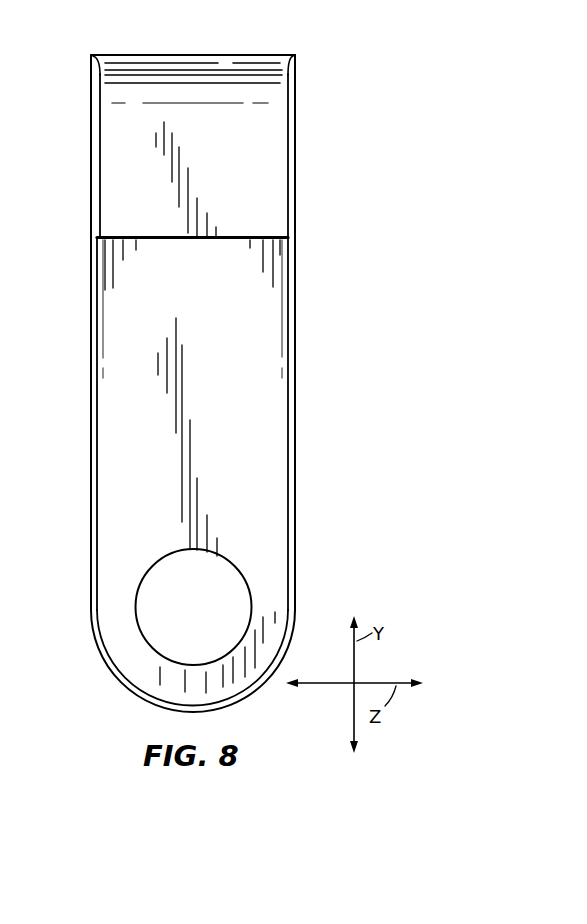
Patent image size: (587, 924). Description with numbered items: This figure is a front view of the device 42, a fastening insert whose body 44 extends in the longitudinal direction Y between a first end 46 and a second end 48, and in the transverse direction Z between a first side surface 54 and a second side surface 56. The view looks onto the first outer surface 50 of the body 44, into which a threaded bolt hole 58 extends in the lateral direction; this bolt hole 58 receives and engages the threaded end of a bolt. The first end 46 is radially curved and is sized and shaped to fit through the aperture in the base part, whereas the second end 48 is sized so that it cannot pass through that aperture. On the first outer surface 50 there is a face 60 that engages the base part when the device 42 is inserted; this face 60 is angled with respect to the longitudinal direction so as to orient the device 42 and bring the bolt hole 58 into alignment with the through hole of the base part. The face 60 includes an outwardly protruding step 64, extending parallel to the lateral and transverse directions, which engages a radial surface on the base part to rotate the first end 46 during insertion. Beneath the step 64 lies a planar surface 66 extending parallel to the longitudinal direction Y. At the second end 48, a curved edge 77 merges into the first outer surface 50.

The device 42 is at (318, 61).
The body 44 is at (272, 425).
The first end 46 is at (98, 683).
The second end 48 is at (224, 42).
The first outer surface 50 is at (258, 352).
The first side surface 54 is at (75, 357).
The second side surface 56 is at (310, 259).
The threaded bolt hole 58 is at (205, 616).
The face 60 is at (164, 250).
The outwardly protruding step 64 is at (227, 242).
The planar surface 66 is at (257, 505).
The curved edge 77 is at (272, 97).